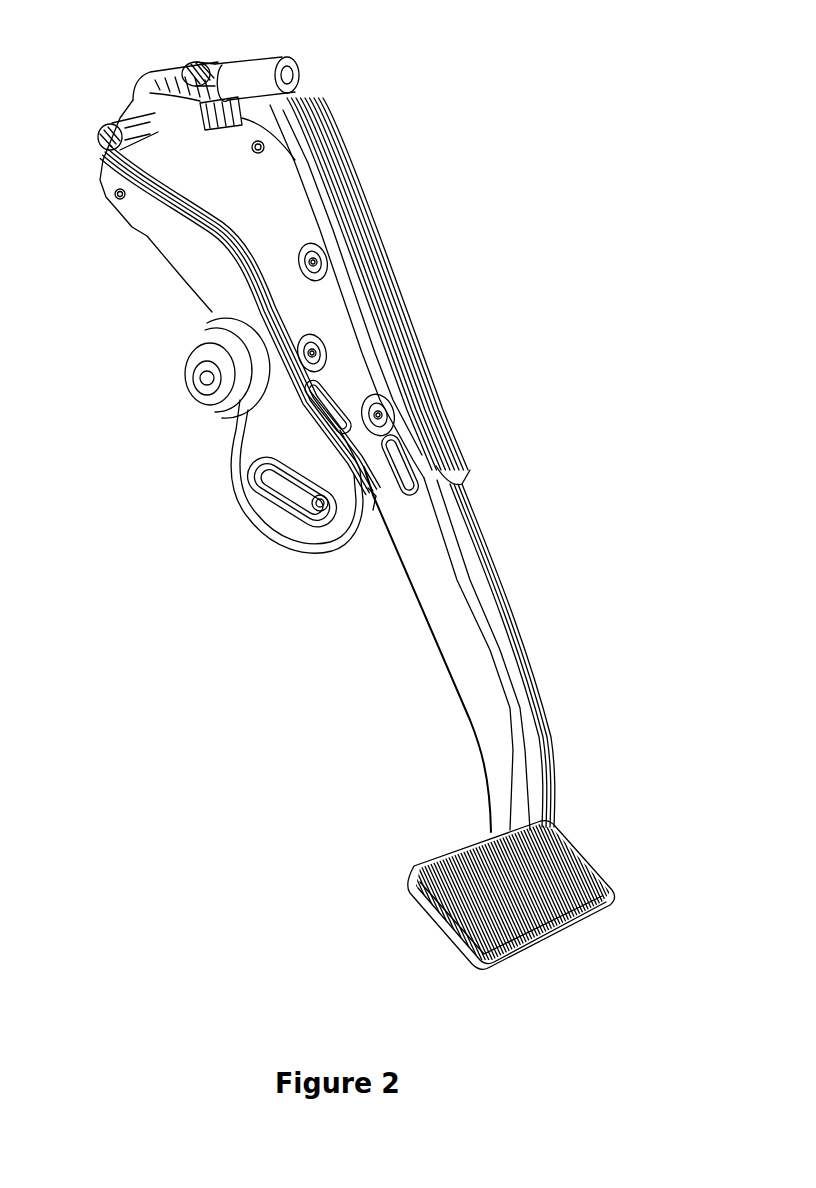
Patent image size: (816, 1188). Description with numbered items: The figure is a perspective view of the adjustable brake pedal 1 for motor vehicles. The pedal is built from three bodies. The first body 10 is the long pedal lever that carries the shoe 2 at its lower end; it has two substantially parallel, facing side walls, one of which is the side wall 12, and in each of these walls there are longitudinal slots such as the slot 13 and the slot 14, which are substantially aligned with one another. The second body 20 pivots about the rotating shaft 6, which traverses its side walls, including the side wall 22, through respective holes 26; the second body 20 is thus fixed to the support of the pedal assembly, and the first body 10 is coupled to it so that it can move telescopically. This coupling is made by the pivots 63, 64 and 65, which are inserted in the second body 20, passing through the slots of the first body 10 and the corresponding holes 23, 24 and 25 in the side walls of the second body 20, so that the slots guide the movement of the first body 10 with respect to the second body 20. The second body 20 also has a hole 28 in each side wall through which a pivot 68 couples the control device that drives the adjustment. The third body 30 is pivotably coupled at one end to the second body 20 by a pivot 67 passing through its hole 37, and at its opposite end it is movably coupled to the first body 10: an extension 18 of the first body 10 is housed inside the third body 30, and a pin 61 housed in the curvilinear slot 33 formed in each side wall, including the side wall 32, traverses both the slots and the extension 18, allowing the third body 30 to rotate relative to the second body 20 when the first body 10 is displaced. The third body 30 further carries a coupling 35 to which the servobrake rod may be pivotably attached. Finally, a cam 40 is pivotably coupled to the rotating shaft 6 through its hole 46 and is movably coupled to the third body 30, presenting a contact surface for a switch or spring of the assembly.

The adjustable brake pedal 1 is at (272, 725).
The shoe 2 is at (535, 882).
The rotating shaft 6 is at (137, 137).
The first body 10 is at (520, 668).
The side wall 12 is at (457, 605).
The slot 13 is at (409, 466).
The slot 14 is at (342, 409).
The extension 18 is at (373, 500).
The second body 20 is at (319, 358).
The side wall 22 is at (268, 202).
The hole 23 is at (382, 418).
The hole 24 is at (337, 298).
The hole 25 is at (316, 262).
The hole 26 is at (153, 111).
The hole 28 is at (262, 146).
The third body 30 is at (280, 404).
The side wall 32 is at (301, 452).
The slot 33 is at (295, 492).
The coupling 35 is at (207, 381).
The hole 37 is at (119, 199).
The cam 40 is at (248, 82).
The hole 46 is at (250, 64).
The pin 61 is at (321, 523).
The pivot 63 is at (378, 415).
The pivot 64 is at (312, 353).
The pivot 65 is at (313, 262).
The pivot 67 is at (120, 194).
The pivot 68 is at (258, 147).